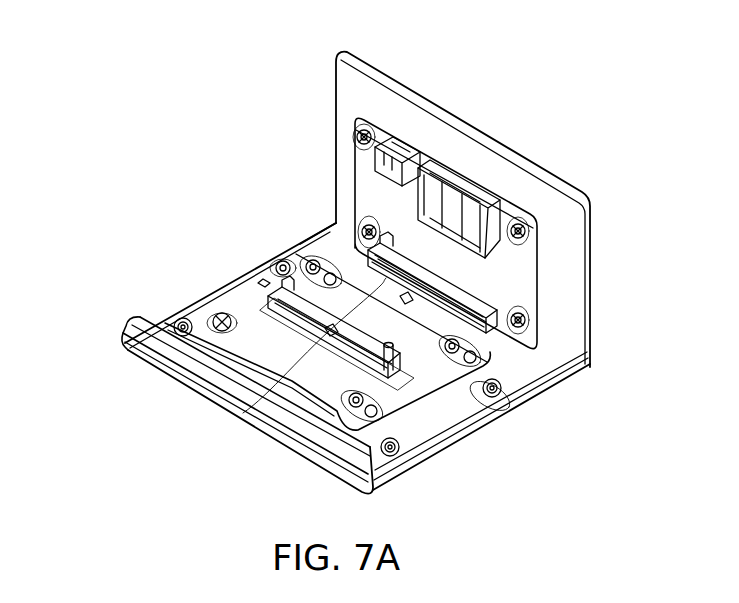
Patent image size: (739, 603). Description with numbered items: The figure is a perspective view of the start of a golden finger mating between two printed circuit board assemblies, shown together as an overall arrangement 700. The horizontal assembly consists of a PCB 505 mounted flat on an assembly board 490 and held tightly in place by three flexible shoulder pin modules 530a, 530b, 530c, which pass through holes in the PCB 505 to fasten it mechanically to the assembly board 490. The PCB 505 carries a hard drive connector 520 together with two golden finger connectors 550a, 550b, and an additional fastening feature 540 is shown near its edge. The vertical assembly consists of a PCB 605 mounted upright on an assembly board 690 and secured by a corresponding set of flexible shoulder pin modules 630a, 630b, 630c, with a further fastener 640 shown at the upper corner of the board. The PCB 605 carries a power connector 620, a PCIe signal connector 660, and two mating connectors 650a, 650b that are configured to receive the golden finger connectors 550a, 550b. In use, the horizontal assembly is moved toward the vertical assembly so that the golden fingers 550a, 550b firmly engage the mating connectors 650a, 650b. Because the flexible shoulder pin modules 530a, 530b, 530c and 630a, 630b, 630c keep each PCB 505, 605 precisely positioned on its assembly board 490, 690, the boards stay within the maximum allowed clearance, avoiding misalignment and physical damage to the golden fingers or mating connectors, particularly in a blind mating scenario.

The assembly 700 is at (176, 62).
The assembly board 690 is at (553, 188).
The PCB 605 is at (448, 162).
The screw 640 is at (363, 116).
The power connector 620 is at (402, 131).
The PCIe signal connector 660 is at (478, 158).
The flexible shoulder pin module 630a is at (521, 243).
The flexible shoulder pin module 630b is at (521, 332).
The flexible shoulder pin module 630c is at (357, 232).
The mating connector 650a is at (243, 413).
The mating connector 650b is at (463, 292).
The assembly board 490 is at (443, 423).
The PCB 505 is at (397, 403).
The flexible shoulder pin module 530a is at (358, 275).
The flexible shoulder pin module 530b is at (499, 406).
The flexible shoulder pin module 530c is at (357, 405).
The golden finger connector 550a is at (285, 262).
The golden finger connector 550b is at (487, 338).
The standoff 540 is at (214, 316).
The hard drive connector 520 is at (262, 286).